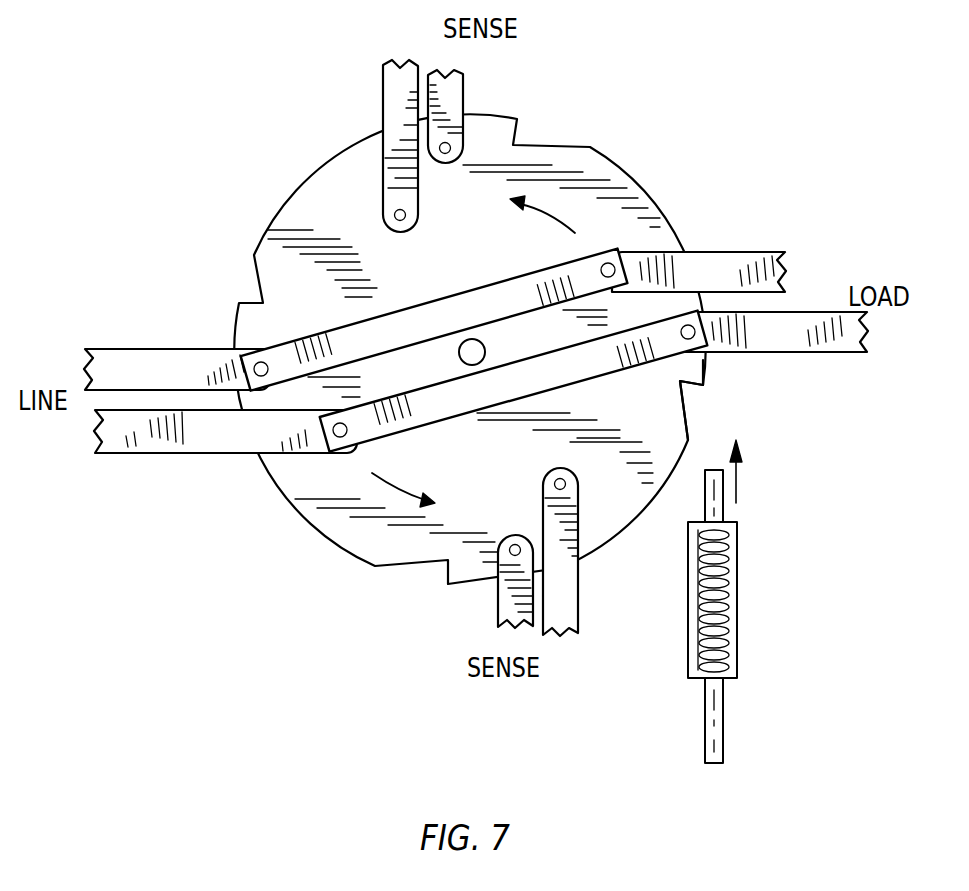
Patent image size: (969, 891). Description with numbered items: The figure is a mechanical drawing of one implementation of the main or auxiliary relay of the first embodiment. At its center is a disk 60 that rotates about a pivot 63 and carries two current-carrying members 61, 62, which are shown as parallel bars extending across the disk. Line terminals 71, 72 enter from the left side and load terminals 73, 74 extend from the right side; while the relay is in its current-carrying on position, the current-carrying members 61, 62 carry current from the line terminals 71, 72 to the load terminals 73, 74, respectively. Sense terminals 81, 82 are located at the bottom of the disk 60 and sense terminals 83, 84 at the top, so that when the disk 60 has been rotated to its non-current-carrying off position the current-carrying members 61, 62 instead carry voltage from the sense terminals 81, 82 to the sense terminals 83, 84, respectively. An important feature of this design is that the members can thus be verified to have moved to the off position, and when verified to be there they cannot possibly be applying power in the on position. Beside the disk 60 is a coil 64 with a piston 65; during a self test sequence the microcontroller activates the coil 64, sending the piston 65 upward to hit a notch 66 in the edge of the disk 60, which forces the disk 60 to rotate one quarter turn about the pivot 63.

The disk 60 is at (316, 172).
The current-carrying member 61 is at (408, 323).
The current-carrying member 62 is at (423, 400).
The pivot 63 is at (486, 348).
The coil 64 is at (737, 597).
The piston 65 is at (724, 728).
The notch 66 is at (700, 386).
The line terminal 71 is at (177, 355).
The line terminal 72 is at (142, 455).
The load terminal 73 is at (800, 252).
The load terminal 74 is at (822, 352).
The sense terminal 81 is at (505, 604).
The sense terminal 82 is at (580, 594).
The sense terminal 83 is at (386, 93).
The sense terminal 84 is at (464, 80).